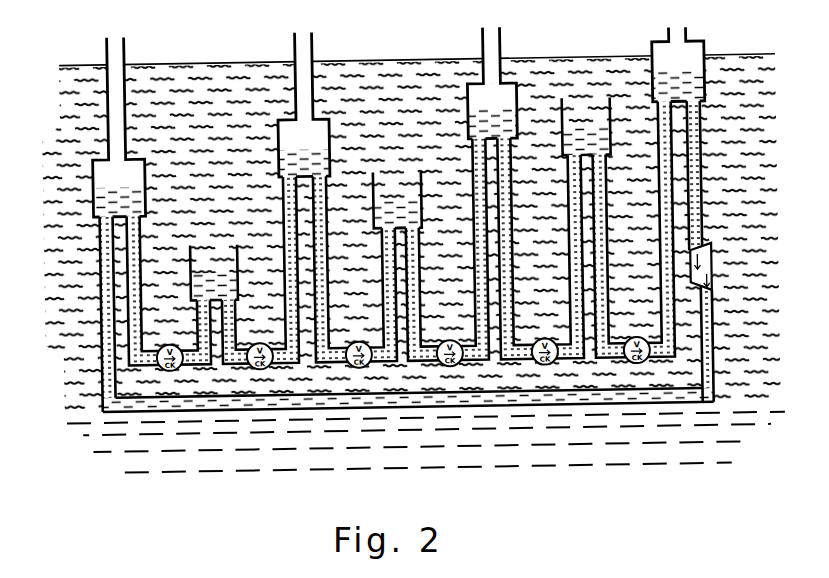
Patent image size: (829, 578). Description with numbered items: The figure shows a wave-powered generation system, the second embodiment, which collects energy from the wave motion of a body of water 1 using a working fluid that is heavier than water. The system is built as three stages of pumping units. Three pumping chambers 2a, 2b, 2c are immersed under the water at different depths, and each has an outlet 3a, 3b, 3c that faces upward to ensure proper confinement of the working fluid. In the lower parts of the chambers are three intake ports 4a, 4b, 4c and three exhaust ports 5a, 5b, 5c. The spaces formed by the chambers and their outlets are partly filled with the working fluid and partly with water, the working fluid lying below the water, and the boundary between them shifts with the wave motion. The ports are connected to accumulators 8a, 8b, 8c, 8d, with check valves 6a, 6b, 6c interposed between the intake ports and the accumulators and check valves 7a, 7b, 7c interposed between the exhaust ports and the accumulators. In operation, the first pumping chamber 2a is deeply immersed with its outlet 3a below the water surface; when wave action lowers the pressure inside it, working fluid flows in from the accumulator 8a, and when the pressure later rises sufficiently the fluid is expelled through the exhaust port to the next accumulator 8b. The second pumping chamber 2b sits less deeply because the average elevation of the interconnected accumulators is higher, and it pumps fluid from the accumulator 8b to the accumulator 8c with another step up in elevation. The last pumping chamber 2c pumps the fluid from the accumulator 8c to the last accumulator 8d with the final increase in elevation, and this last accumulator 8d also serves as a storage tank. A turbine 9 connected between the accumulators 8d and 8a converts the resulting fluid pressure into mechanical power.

The body of water 1 is at (196, 122).
The first pumping chamber 2a is at (197, 275).
The second pumping chamber 2b is at (378, 203).
The last pumping chamber 2c is at (572, 131).
The outlet 3a is at (203, 246).
The outlet 3b is at (390, 178).
The outlet 3c is at (575, 108).
The intake port 4a is at (203, 296).
The intake port 4b is at (383, 235).
The intake port 4c is at (567, 158).
The exhaust port 5a is at (236, 293).
The exhaust port 5b is at (422, 234).
The exhaust port 5c is at (604, 160).
The check valve 6a is at (161, 341).
The check valve 6b is at (348, 340).
The check valve 6c is at (538, 341).
The check valve 7a is at (262, 341).
The check valve 7b is at (455, 340).
The check valve 7c is at (641, 341).
The accumulator 8a is at (94, 170).
The accumulator 8b is at (280, 134).
The accumulator 8c is at (470, 104).
The last accumulator 8d is at (655, 66).
The turbine 9 is at (714, 257).